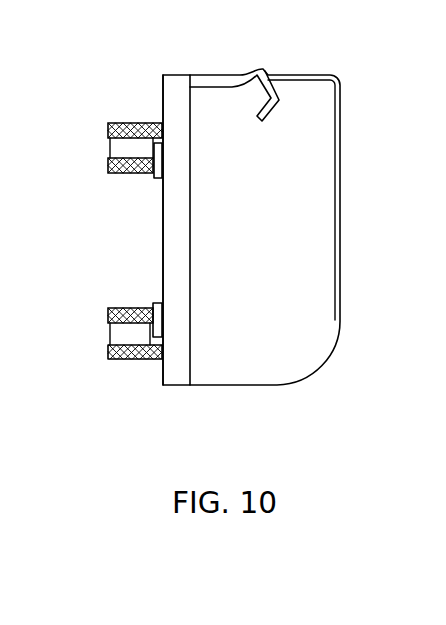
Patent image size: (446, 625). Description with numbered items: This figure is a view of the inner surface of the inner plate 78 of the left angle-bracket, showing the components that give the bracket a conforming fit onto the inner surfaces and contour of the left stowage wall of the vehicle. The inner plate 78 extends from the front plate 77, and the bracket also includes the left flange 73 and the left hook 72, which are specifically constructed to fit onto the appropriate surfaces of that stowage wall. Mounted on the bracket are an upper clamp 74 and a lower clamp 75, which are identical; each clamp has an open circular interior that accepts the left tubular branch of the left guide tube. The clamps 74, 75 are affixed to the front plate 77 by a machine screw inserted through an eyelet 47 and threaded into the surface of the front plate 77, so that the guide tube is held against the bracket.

The left hook 72 is at (265, 67).
The left flange 73 is at (177, 362).
The upper clamp 74 is at (130, 123).
The lower clamp 75 is at (130, 307).
The eyelet 47 is at (157, 178).
The front plate 77 is at (162, 252).
The inner plate 78 is at (315, 262).